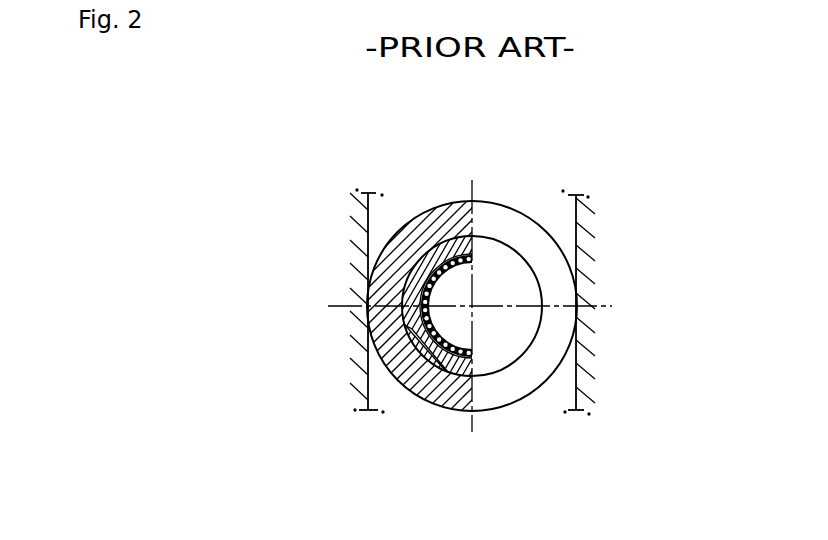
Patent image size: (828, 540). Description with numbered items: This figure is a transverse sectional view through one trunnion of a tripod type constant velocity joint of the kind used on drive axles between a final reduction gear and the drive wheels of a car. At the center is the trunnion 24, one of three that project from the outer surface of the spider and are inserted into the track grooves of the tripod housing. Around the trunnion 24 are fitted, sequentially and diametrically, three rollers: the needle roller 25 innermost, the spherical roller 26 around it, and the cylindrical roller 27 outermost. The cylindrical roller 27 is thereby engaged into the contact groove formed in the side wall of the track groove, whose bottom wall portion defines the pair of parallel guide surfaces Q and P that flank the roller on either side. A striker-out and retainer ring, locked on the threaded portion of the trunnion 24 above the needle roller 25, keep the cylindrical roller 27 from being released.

The trunnion 24 is at (472, 319).
The needle roller 25 is at (446, 372).
The spherical roller 26 is at (390, 344).
The cylindrical roller 27 is at (420, 377).
The guide surface Q is at (372, 233).
The guide surface P is at (576, 230).